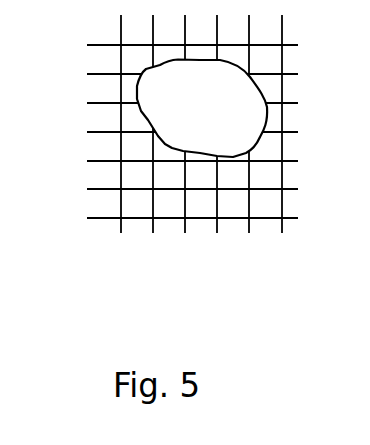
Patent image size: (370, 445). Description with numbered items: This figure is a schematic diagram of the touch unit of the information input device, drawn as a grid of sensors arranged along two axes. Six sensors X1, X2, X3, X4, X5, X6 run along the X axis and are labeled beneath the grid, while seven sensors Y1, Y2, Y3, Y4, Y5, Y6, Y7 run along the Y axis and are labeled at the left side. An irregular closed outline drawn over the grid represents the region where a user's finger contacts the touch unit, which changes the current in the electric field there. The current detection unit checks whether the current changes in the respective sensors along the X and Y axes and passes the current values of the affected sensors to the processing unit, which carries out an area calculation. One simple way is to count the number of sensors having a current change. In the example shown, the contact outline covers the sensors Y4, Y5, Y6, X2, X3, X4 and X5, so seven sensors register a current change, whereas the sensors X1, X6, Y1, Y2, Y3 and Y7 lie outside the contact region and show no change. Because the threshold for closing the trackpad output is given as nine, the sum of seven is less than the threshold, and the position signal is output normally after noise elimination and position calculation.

The X-axis sensor X1 is at (115, 148).
The X-axis sensor X2 is at (148, 148).
The X-axis sensor X3 is at (180, 148).
The X-axis sensor X4 is at (212, 148).
The X-axis sensor X5 is at (244, 148).
The X-axis sensor X6 is at (276, 148).
The Y-axis sensor Y1 is at (176, 219).
The Y-axis sensor Y2 is at (176, 190).
The Y-axis sensor Y3 is at (176, 162).
The Y-axis sensor Y4 is at (176, 133).
The Y-axis sensor Y5 is at (176, 104).
The Y-axis sensor Y6 is at (176, 75).
The Y-axis sensor Y7 is at (176, 47).